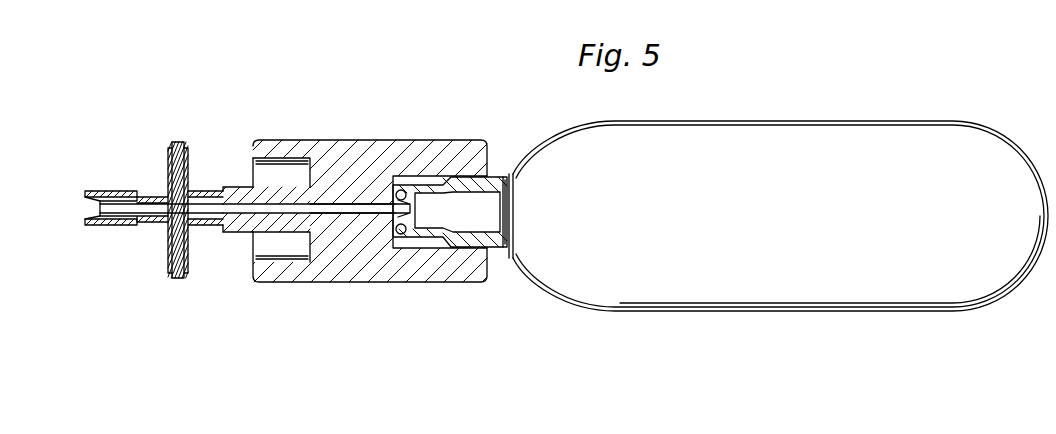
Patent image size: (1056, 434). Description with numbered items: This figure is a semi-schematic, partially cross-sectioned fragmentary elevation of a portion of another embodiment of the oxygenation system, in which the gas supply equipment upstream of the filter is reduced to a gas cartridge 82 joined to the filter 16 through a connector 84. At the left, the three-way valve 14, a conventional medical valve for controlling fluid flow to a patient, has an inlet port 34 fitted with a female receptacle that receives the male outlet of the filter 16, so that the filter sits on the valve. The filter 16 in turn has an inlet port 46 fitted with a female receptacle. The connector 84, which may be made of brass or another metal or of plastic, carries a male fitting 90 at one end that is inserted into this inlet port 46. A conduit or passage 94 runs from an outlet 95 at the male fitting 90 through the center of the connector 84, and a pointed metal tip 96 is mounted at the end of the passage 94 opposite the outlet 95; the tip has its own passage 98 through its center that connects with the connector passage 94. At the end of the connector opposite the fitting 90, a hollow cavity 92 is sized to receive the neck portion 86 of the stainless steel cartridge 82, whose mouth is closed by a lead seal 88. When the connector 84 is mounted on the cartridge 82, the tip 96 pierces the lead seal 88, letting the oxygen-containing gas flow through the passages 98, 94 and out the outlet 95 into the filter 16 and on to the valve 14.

The three-way valve 14 is at (123, 229).
The filter 16 is at (160, 169).
The inlet port 34 is at (141, 192).
The inlet port 46 is at (216, 190).
The gas cartridge 82 is at (800, 201).
The connector 84 is at (433, 283).
The neck portion 86 is at (462, 185).
The lead seal 88 is at (404, 236).
The male fitting 90 is at (205, 226).
The hollow cavity 92 is at (424, 178).
The passage 94 is at (325, 200).
The outlet 95 is at (188, 200).
The pointed metal tip 96 is at (393, 203).
The passage 98 is at (396, 232).